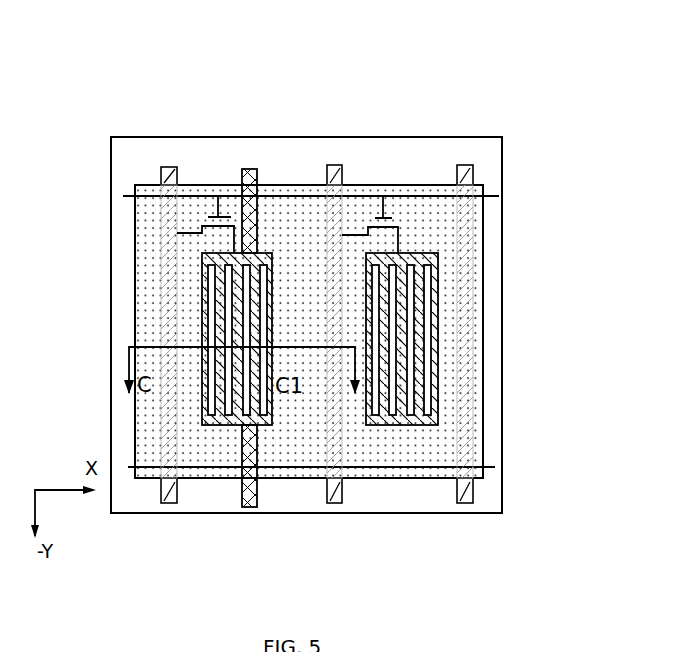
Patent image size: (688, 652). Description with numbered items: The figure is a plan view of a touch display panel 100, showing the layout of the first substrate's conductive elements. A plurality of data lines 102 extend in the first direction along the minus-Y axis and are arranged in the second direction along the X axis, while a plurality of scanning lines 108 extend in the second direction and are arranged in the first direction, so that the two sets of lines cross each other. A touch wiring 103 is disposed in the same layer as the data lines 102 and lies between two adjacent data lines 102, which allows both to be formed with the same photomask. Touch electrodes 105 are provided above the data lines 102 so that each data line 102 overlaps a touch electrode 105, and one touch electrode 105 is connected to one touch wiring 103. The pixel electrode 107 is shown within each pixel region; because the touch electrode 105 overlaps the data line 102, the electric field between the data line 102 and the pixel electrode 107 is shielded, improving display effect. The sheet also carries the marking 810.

The touch display panel 100 is at (482, 106).
The data line 102 is at (163, 167).
The touch wiring 103 is at (250, 169).
The touch electrode 105 is at (366, 185).
The pixel electrode 107 is at (225, 424).
The scanning line 108 is at (136, 185).
The layout 810 is at (45, 595).